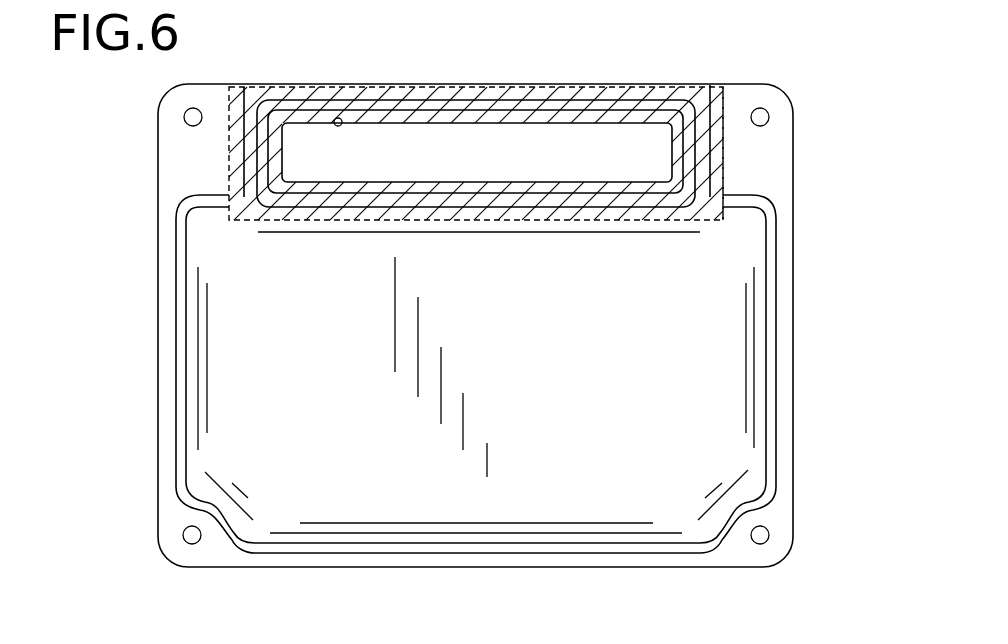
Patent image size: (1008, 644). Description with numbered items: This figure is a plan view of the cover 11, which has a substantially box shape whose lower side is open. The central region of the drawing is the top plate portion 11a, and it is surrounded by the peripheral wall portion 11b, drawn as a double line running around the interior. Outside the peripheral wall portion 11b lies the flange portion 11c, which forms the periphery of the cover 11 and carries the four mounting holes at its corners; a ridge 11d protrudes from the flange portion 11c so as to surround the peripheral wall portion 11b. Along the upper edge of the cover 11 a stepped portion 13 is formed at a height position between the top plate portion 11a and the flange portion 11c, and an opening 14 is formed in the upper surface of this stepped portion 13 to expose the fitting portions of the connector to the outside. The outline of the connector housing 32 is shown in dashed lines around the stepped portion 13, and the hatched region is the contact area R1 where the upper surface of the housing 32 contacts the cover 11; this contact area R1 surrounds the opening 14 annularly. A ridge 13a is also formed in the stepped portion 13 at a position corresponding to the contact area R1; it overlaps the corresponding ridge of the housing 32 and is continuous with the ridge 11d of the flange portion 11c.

The cover 11 is at (517, 360).
The top plate portion 11a is at (335, 502).
The peripheral wall portion 11b is at (400, 538).
The flange portion 11c is at (792, 345).
The ridge 11d is at (526, 415).
The stepped portion 13 is at (474, 122).
The ridge 13a is at (697, 157).
The opening 14 is at (338, 118).
The contact area R1 is at (650, 93).
The housing 32 is at (735, 105).